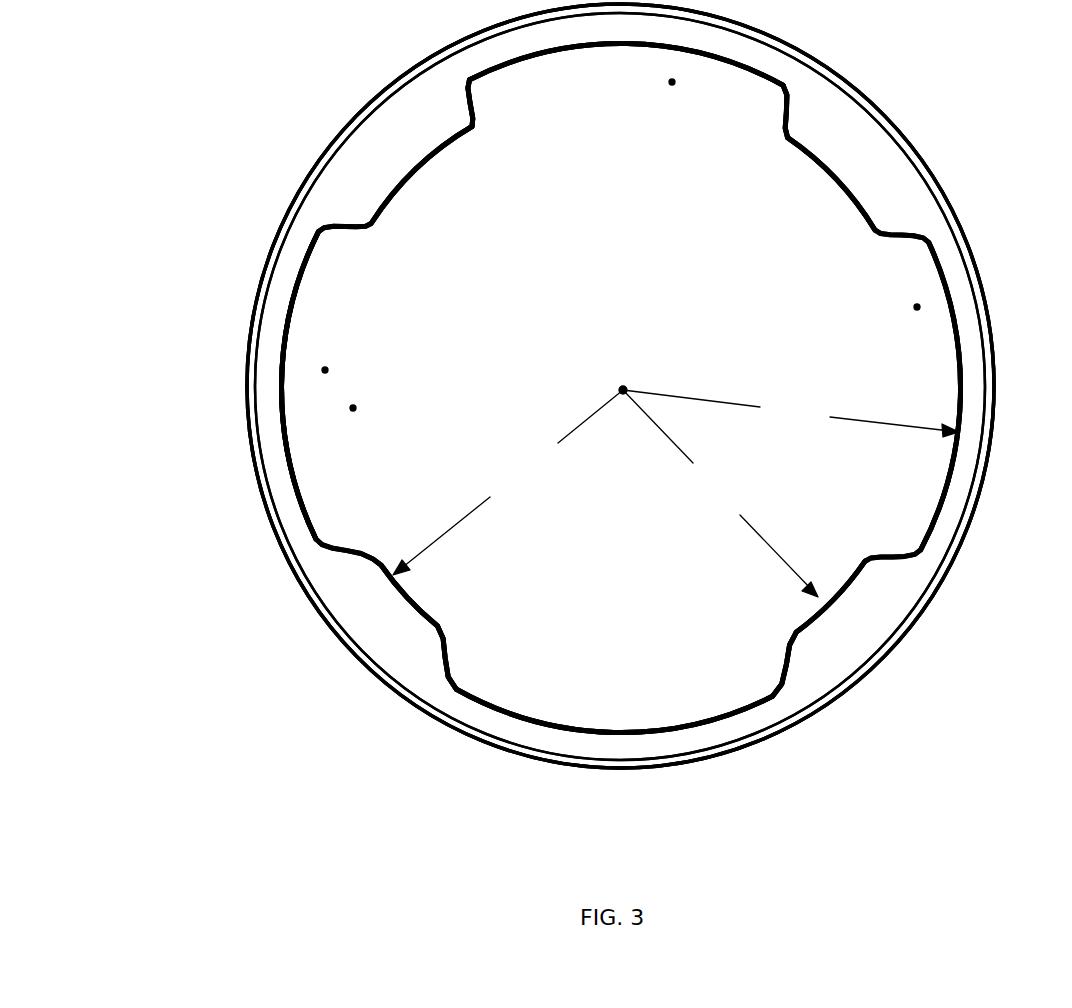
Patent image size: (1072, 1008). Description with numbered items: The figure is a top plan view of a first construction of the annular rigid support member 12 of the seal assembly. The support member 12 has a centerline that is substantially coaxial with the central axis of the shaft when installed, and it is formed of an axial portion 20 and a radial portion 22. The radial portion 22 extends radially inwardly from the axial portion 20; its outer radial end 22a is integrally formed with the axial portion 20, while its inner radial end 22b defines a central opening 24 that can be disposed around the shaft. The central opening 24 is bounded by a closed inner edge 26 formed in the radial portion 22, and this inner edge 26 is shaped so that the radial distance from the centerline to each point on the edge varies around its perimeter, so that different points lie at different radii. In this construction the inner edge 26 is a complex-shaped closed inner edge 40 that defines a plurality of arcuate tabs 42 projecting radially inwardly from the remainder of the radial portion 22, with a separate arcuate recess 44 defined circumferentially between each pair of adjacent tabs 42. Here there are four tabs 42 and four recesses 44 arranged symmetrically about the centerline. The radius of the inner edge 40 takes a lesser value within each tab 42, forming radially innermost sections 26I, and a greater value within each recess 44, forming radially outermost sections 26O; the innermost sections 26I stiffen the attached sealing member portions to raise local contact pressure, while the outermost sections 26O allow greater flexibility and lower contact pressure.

The annular rigid support member 12 is at (264, 163).
The axial portion 20 is at (913, 137).
The radial portion 22 is at (908, 187).
The outer radial end 22a is at (963, 247).
The inner radial end 22b is at (957, 305).
The central opening 24 is at (353, 408).
The inner edge 26 is at (421, 182).
The radially outermost sections 26O is at (622, 44).
The radially innermost sections 26I is at (450, 143).
The complex-shaped closed inner edge 40 is at (297, 500).
The arcuate tabs 42 is at (378, 198).
The arcuate recesses 44 is at (672, 82).